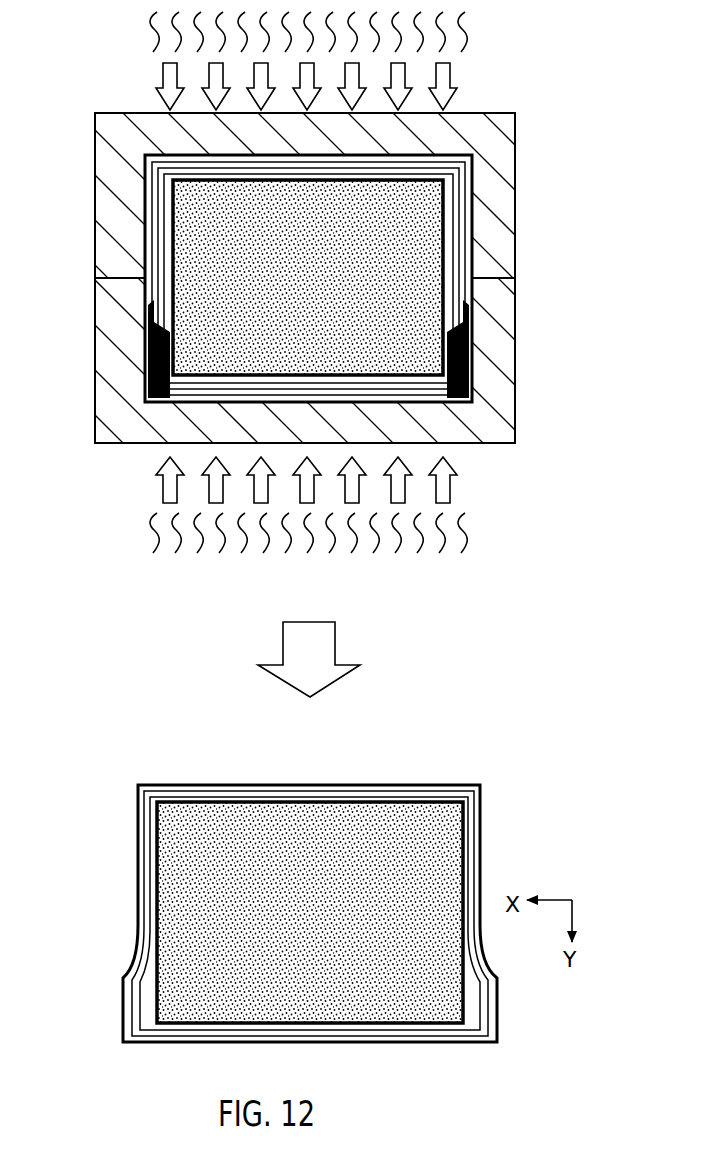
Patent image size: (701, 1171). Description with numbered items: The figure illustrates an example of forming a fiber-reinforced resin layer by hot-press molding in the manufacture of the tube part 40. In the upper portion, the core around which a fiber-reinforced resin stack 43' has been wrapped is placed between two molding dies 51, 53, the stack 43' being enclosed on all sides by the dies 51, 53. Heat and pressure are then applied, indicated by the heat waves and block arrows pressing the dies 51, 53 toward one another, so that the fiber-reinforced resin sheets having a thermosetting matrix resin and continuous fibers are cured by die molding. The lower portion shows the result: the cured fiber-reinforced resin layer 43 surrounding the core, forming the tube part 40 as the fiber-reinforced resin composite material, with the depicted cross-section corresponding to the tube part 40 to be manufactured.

The tube part 40 is at (338, 876).
The fiber-reinforced resin layer 43 is at (360, 913).
The fiber-reinforced resin stack 43' is at (362, 278).
The molding die 51 is at (503, 200).
The molding die 53 is at (503, 352).